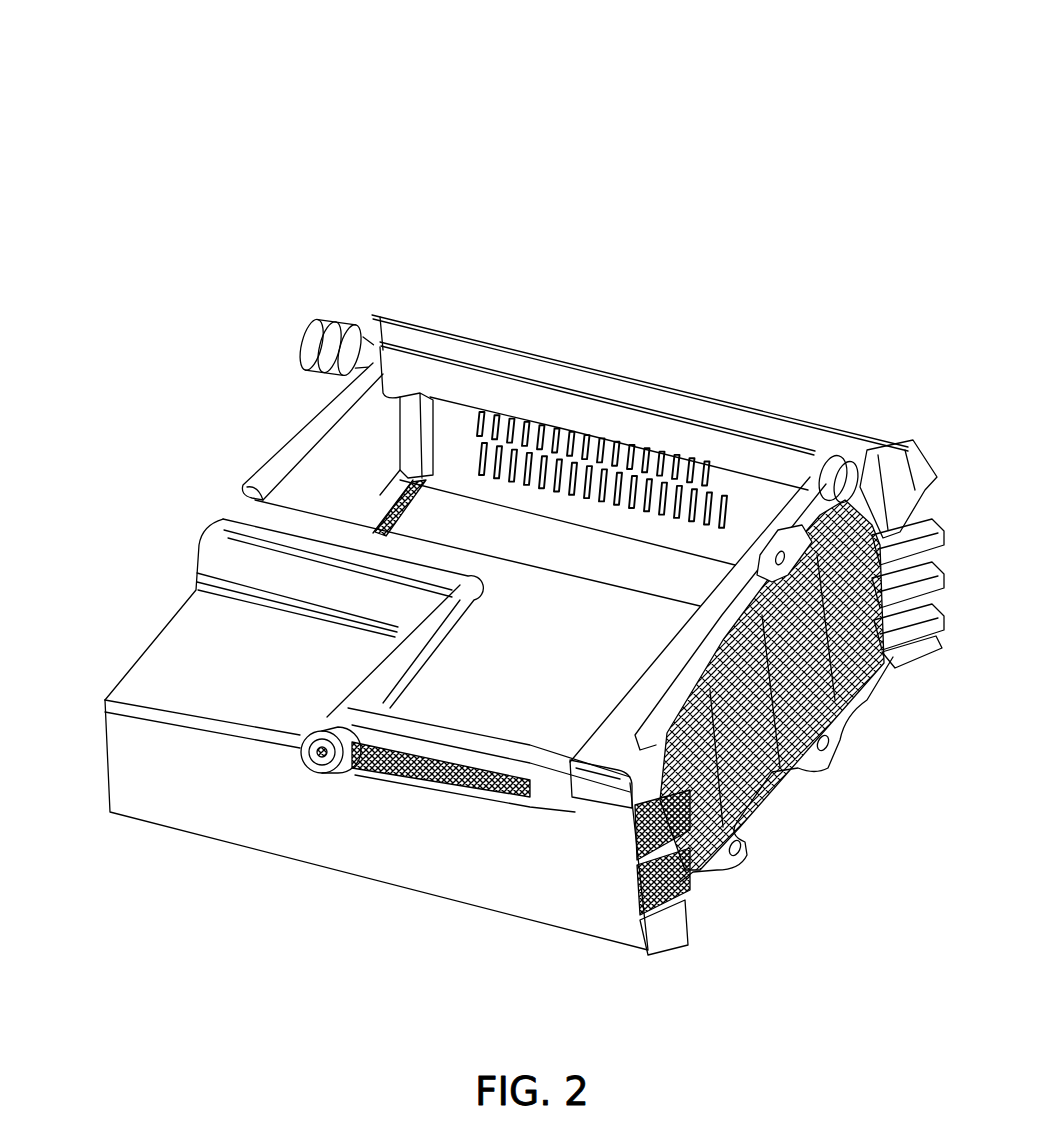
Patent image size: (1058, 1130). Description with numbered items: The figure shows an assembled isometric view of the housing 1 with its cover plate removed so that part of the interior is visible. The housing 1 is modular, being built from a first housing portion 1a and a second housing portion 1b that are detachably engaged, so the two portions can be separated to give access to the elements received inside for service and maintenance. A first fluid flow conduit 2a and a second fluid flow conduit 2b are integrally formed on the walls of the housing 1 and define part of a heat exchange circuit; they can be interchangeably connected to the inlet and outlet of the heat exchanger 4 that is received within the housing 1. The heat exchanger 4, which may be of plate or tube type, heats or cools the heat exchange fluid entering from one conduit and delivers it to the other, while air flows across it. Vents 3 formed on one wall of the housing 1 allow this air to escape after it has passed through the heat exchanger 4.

The housing 1 is at (762, 184).
The first housing portion 1a is at (465, 836).
The second housing portion 1b is at (764, 527).
The first fluid flow conduit 2a is at (272, 576).
The second fluid flow conduit 2b is at (470, 397).
The vents 3 is at (582, 475).
The heat exchanger 4 is at (740, 743).